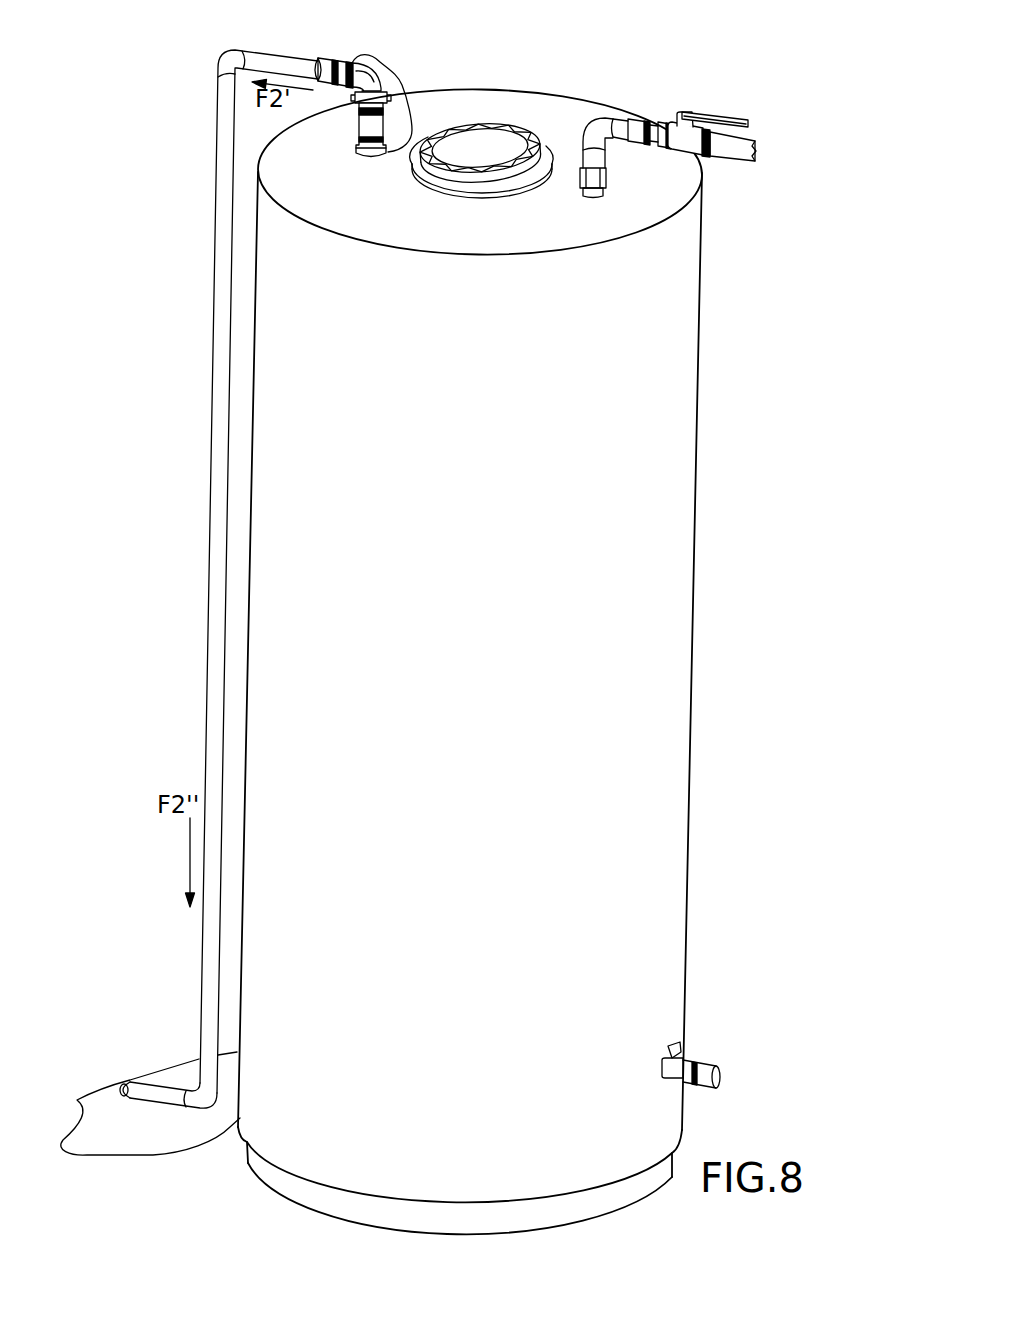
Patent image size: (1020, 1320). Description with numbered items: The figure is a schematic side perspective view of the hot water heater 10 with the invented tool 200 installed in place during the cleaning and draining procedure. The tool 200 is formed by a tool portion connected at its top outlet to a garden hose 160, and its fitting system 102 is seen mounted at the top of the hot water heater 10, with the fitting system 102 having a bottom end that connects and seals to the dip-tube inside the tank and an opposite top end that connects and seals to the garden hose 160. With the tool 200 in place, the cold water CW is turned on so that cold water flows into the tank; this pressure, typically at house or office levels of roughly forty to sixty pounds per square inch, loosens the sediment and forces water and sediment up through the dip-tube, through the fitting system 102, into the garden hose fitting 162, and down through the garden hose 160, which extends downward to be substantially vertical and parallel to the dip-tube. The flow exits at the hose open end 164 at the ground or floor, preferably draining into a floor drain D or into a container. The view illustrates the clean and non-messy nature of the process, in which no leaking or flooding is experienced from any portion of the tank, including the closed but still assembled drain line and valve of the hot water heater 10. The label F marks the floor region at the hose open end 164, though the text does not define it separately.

The hot water heater 10 is at (732, 470).
The fitting system 102 is at (397, 106).
The garden hose 160 is at (214, 345).
The garden hose fitting 162 is at (338, 60).
The hose open end 164 is at (123, 1082).
The tool 200 is at (240, 554).
The cold water CW is at (822, 160).
The floor drain D is at (125, 1087).
The floor puddle F is at (110, 1128).